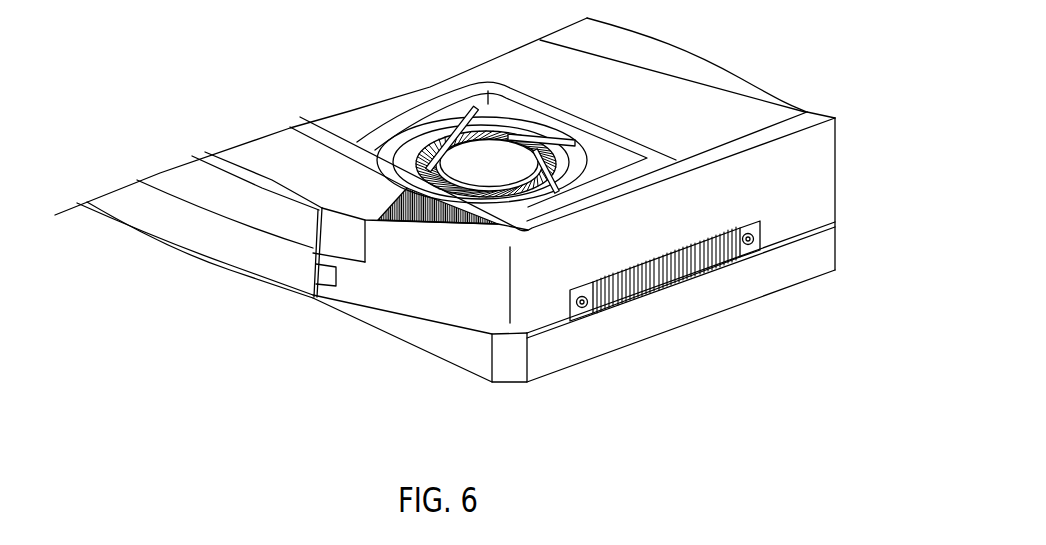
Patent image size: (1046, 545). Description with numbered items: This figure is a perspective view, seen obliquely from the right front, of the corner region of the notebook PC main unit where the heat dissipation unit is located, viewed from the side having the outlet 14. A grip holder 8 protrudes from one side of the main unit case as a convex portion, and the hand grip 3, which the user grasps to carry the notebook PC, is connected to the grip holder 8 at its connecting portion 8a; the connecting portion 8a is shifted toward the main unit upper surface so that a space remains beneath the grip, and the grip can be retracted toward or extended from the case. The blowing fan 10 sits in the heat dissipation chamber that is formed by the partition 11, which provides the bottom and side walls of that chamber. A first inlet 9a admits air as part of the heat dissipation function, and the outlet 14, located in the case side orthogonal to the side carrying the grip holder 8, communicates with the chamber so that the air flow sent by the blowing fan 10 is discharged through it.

The hand grip 3 is at (208, 243).
The grip holder 8 is at (438, 298).
The connecting portion 8a is at (342, 293).
The first inlet 9a is at (417, 221).
The blowing fan 10 is at (432, 142).
The partition 11 is at (400, 108).
The outlet 14 is at (663, 277).